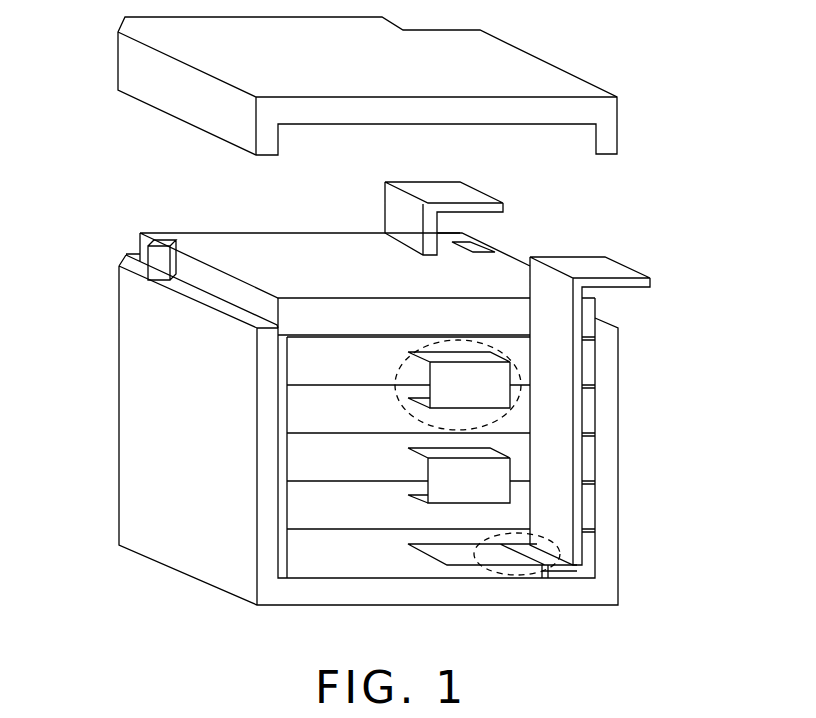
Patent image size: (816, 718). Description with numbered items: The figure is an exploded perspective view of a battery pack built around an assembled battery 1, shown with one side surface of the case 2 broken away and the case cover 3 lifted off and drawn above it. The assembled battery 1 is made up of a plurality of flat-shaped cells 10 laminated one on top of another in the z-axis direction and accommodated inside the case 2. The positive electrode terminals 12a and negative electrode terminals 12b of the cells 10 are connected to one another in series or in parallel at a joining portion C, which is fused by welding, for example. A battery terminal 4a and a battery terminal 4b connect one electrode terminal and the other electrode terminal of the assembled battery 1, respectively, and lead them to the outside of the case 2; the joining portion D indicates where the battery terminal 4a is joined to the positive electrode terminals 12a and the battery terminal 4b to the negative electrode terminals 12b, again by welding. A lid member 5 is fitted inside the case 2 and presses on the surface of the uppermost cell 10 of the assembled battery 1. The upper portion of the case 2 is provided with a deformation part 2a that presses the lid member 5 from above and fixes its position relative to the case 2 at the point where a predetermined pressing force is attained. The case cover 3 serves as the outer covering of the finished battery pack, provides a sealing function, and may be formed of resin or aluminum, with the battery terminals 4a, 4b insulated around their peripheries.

The assembled battery 1 is at (656, 456).
The case 2 is at (118, 384).
The deformation part 2a is at (160, 258).
The case cover 3 is at (118, 58).
The battery terminal 4a is at (462, 194).
The battery terminal 4b is at (605, 268).
The lid member 5 is at (213, 240).
The flat-shaped cell 10 is at (590, 363).
The positive electrode terminal 12a is at (413, 405).
The negative electrode terminal 12b is at (413, 360).
The joining portion C is at (438, 340).
The joining portion D is at (542, 578).